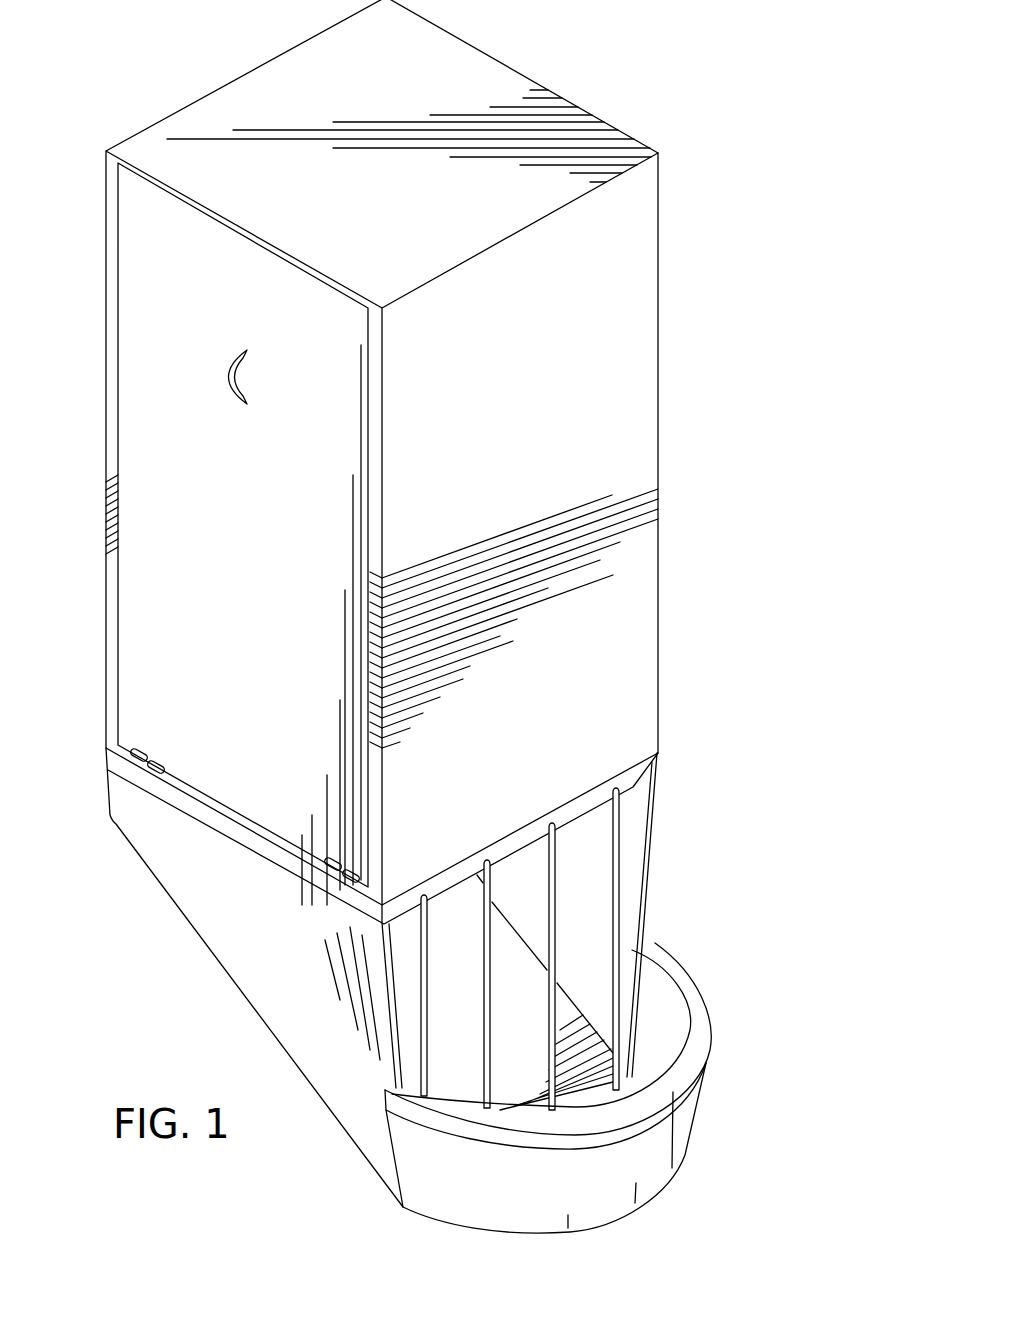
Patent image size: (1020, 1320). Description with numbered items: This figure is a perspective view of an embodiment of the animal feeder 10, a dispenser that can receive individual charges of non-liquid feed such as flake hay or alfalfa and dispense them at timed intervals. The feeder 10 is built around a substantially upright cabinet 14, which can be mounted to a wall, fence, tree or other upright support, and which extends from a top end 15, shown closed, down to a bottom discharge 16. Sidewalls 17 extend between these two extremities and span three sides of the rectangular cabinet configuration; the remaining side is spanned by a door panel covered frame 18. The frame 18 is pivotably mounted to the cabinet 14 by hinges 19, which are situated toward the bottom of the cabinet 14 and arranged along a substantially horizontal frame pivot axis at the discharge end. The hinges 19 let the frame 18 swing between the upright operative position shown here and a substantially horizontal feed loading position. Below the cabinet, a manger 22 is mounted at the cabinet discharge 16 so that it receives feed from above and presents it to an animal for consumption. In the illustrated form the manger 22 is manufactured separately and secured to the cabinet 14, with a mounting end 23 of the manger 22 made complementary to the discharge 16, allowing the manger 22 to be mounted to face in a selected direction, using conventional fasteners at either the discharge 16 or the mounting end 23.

The animal feeder 10 is at (682, 281).
The cabinet 14 is at (602, 422).
The top end 15 is at (469, 83).
The bottom discharge 16 is at (632, 790).
The sidewalls 17 is at (700, 592).
The door panel covered frame 18 is at (150, 612).
The hinges 19 is at (142, 767).
The manger 22 is at (238, 986).
The mounting end 23 is at (180, 810).